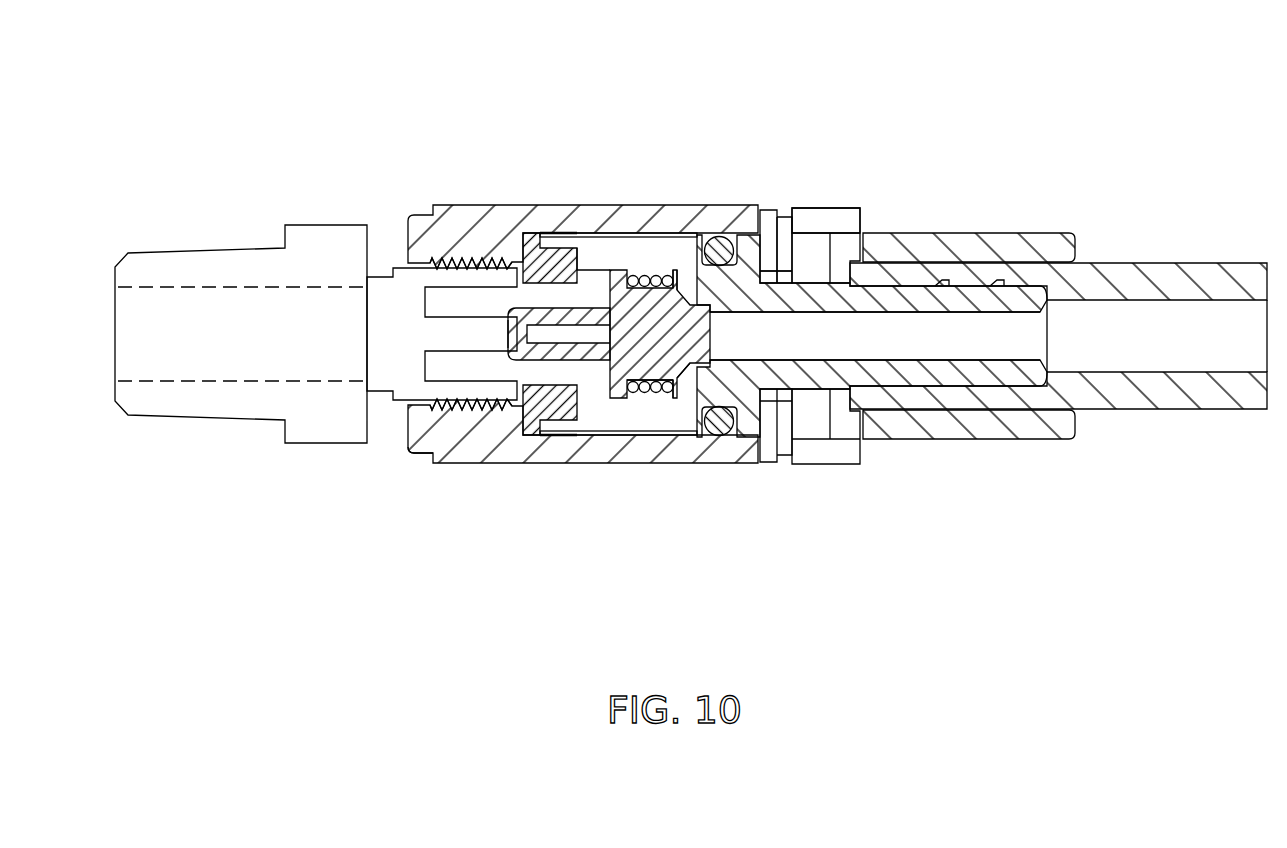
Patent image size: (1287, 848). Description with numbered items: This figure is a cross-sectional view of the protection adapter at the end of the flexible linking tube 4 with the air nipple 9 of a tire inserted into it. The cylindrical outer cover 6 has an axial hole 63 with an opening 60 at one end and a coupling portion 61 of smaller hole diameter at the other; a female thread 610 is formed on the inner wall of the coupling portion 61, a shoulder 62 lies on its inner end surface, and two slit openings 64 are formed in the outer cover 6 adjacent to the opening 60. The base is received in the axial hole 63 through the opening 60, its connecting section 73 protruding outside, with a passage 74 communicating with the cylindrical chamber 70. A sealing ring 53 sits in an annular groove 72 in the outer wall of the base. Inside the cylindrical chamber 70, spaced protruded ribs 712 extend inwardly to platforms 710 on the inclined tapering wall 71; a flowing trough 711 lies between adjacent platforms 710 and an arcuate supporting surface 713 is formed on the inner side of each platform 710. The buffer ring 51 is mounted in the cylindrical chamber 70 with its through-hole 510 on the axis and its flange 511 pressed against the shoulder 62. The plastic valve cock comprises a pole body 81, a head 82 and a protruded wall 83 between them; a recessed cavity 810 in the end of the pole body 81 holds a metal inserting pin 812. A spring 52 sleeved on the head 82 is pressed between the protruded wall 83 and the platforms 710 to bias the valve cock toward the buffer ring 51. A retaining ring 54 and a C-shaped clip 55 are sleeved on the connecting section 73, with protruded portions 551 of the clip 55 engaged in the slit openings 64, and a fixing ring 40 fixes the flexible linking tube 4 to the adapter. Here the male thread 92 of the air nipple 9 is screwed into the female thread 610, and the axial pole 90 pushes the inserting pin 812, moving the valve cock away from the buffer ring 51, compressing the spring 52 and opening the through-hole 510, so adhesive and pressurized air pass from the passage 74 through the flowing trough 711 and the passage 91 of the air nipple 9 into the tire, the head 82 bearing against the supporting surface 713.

The flexible linking tube 4 is at (1213, 278).
The fixing ring 40 is at (940, 240).
The cylindrical outer cover 6 is at (460, 206).
The female thread 610 is at (440, 245).
The air nipple 9 is at (198, 248).
The axial pole 90 is at (420, 453).
The passage 91 is at (208, 338).
The male thread 92 is at (425, 258).
The buffer ring 51 is at (572, 248).
The through-hole 510 is at (573, 405).
The flange 511 is at (567, 234).
The spring 52 is at (650, 270).
The sealing ring 53 is at (758, 215).
The protruded portions 551 is at (783, 245).
The retaining ring 54 is at (812, 463).
The C-shaped clip 55 is at (858, 425).
The opening 60 is at (863, 250).
The axial hole 63 is at (842, 247).
The slit openings 64 is at (782, 245).
The coupling portion 61 is at (507, 342).
The shoulder 62 is at (533, 402).
The cylindrical chamber 70 is at (594, 400).
The platforms 710 is at (675, 262).
The flowing trough 711 is at (719, 240).
The protruded ribs 712 is at (652, 398).
The supporting surface 713 is at (748, 425).
The inclined tapering wall 71 is at (762, 432).
The annular groove 72 is at (705, 430).
The connecting section 73 is at (1008, 295).
The passage 74 is at (1000, 330).
The pole body 81 is at (550, 315).
The recessed cavity 810 is at (630, 273).
The inserting pin 812 is at (465, 340).
The head 82 is at (690, 398).
The protruded wall 83 is at (632, 395).